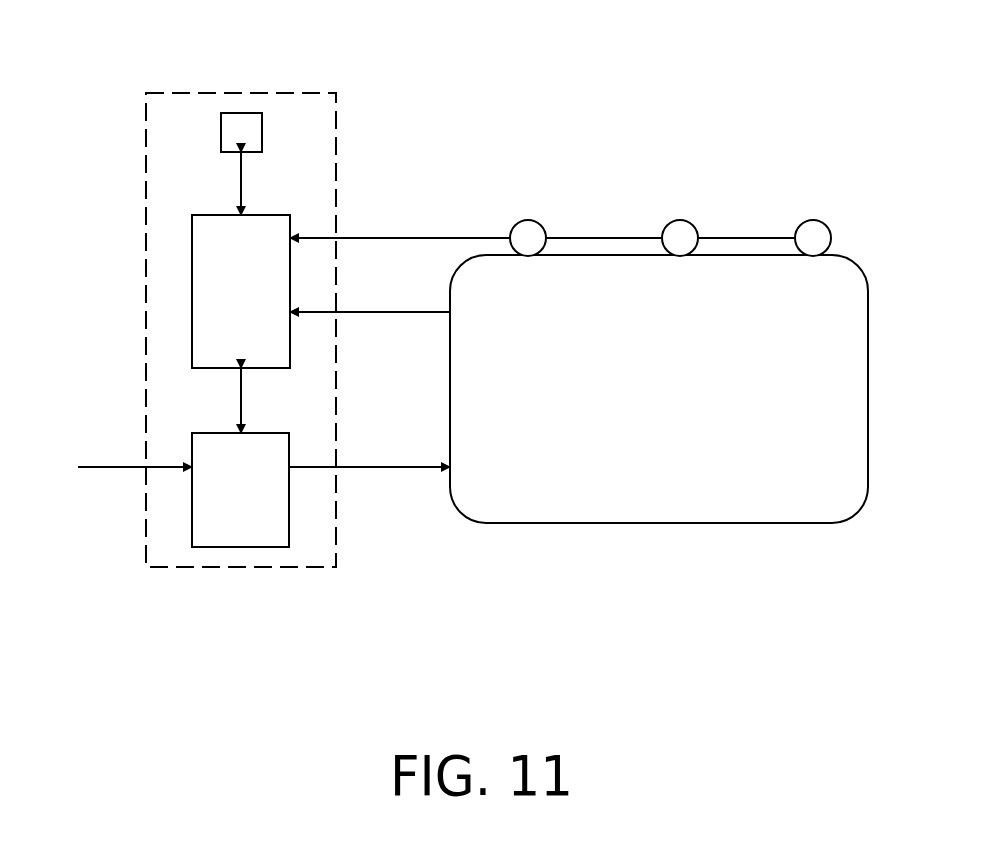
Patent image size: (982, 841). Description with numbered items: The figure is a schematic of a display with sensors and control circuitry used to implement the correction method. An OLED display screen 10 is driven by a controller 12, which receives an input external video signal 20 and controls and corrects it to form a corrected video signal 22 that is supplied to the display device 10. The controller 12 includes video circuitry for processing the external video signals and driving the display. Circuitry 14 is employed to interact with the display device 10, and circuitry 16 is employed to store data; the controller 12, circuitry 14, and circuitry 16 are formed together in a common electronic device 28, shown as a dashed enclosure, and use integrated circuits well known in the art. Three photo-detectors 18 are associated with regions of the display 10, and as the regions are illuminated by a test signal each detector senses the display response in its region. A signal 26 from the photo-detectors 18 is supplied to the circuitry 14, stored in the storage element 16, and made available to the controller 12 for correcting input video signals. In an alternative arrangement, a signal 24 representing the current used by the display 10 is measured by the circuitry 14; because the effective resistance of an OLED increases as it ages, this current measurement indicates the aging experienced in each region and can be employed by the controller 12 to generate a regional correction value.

The OLED display screen 10 is at (770, 523).
The controller 12 is at (257, 548).
The circuitry 14 is at (192, 277).
The circuitry 16 is at (241, 113).
The photo-detector 18 is at (528, 220).
The input external video signal 20 is at (118, 465).
The corrected video signal 22 is at (365, 468).
The signal 24 is at (362, 313).
The signal 26 is at (397, 238).
The common electronic device 28 is at (146, 535).